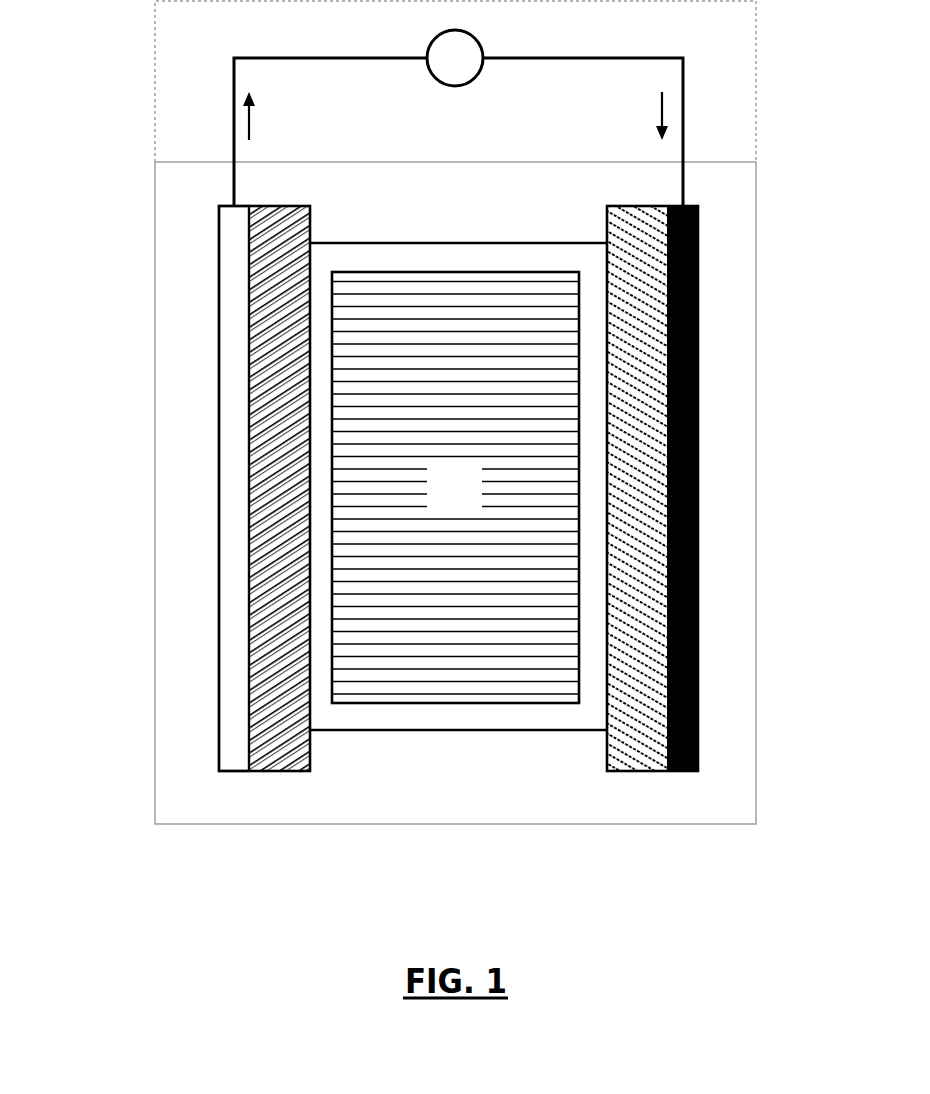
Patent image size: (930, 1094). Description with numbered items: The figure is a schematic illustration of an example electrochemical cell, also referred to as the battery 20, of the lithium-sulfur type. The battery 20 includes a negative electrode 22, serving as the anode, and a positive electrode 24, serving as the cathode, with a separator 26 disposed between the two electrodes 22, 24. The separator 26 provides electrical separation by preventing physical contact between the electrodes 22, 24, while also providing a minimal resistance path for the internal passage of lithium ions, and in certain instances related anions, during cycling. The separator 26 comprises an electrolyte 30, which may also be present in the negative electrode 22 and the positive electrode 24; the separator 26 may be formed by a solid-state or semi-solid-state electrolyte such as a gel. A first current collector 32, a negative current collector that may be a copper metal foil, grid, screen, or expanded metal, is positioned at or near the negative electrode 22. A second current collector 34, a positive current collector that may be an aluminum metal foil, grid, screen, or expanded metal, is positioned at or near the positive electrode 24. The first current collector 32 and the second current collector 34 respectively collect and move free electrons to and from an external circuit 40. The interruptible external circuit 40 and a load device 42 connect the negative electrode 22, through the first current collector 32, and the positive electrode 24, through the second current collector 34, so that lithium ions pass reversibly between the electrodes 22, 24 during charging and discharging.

The electrochemical cell 20 is at (147, 240).
The negative electrode 22 is at (637, 772).
The positive electrode 24 is at (275, 772).
The separator 26 is at (455, 731).
The electrolyte 30 is at (455, 487).
The first current collector 32 is at (698, 489).
The second current collector 34 is at (219, 487).
The external circuit 40 is at (147, 78).
The load device 42 is at (455, 58).